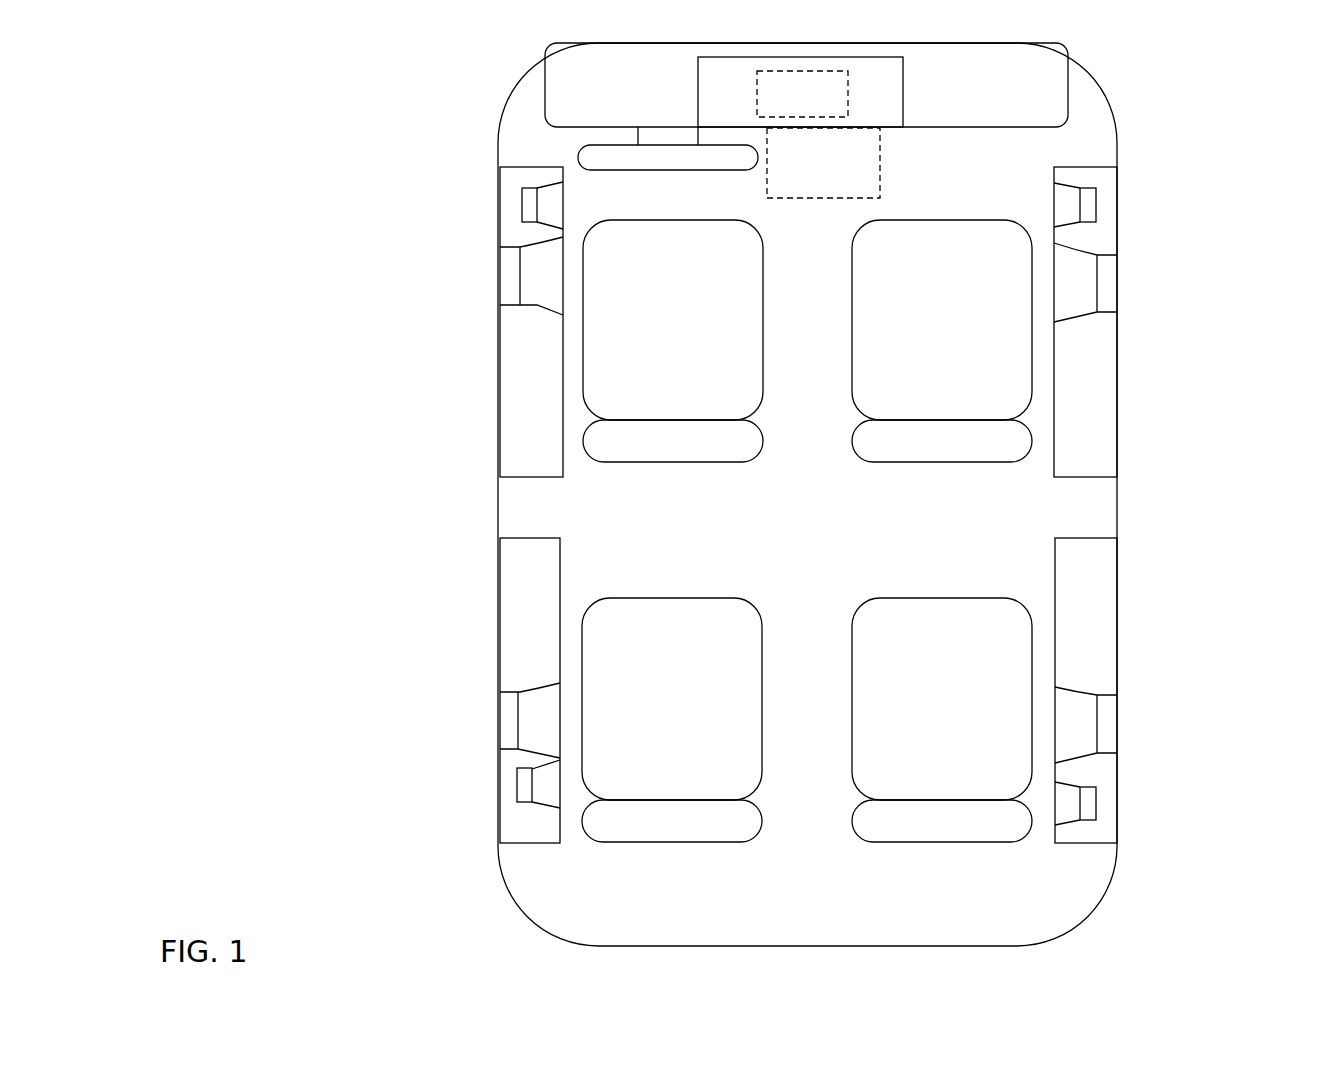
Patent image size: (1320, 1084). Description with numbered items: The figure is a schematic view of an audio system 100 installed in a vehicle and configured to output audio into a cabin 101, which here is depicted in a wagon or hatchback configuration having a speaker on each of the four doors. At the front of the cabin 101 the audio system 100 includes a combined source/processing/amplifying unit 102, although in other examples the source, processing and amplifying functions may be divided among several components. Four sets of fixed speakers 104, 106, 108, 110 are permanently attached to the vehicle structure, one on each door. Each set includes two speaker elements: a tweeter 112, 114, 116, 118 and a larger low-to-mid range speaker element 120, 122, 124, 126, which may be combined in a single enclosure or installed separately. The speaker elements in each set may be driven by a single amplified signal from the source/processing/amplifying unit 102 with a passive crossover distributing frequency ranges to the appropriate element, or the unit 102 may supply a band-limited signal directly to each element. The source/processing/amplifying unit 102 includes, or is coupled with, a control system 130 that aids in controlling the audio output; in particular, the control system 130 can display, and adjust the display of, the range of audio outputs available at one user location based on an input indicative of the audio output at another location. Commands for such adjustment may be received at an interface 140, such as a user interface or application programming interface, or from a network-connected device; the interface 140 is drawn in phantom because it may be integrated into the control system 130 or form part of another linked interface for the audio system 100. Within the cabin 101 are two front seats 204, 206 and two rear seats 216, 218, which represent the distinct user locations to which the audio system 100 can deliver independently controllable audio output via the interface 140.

The audio system 100 is at (300, 140).
The cabin 101 is at (780, 548).
The source/processing/amplifying unit 102 is at (892, 98).
The set of fixed speakers 104 is at (463, 167).
The set of fixed speakers 106 is at (1147, 167).
The set of fixed speakers 108 is at (464, 688).
The set of fixed speakers 110 is at (1152, 688).
The tweeter 112 is at (556, 206).
The tweeter 114 is at (1062, 203).
The tweeter 116 is at (550, 803).
The tweeter 118 is at (1068, 818).
The low-to-mid range speaker element 120 is at (537, 305).
The low-to-mid range speaker element 122 is at (1075, 310).
The low-to-mid range speaker element 124 is at (537, 697).
The low-to-mid range speaker element 126 is at (1080, 700).
The control system 130 is at (842, 106).
The interface 140 is at (803, 189).
The seat 204 is at (693, 263).
The seat 206 is at (866, 259).
The rear seat 216 is at (690, 640).
The rear seat 218 is at (878, 640).